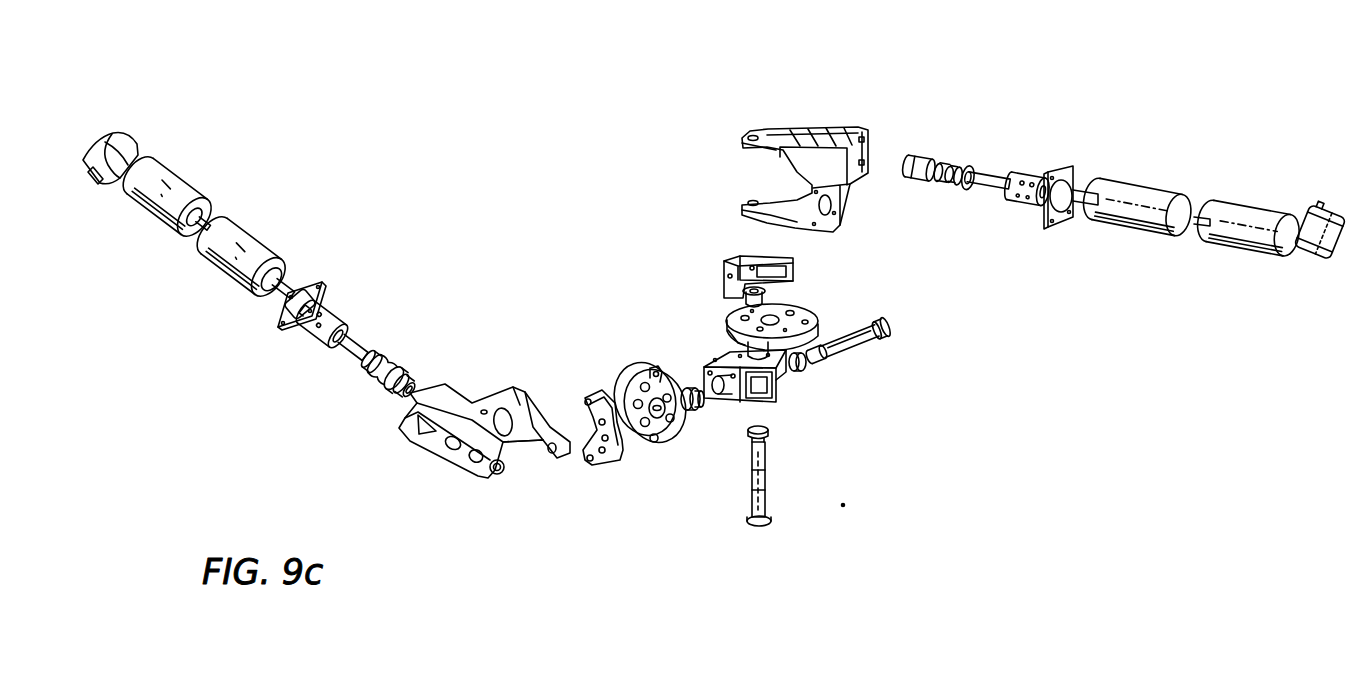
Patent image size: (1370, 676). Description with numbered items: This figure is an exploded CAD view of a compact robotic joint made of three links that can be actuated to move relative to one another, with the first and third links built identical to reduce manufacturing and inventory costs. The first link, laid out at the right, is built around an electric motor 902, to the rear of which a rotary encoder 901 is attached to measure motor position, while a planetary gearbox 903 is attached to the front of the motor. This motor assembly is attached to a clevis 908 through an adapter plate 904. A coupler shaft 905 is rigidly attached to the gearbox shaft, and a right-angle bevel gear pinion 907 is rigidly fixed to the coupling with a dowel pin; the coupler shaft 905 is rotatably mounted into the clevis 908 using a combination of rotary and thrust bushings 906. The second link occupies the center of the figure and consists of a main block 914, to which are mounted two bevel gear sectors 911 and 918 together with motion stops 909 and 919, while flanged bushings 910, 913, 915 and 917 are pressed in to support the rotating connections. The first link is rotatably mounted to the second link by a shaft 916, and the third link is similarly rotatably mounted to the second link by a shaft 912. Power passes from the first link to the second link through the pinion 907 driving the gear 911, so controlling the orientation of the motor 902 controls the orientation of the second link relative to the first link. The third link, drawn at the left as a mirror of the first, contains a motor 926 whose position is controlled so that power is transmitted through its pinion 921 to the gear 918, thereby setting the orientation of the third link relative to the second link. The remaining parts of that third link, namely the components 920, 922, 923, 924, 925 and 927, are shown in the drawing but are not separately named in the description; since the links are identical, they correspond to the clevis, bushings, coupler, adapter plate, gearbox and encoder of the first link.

The rotary encoder 901 is at (1310, 258).
The electric motor 902 is at (1250, 257).
The planetary gearbox 903 is at (1133, 235).
The adapter plate 904 is at (1060, 218).
The coupler shaft 905 is at (1027, 205).
The rotary and thrust bushings 906 is at (987, 158).
The right-angle bevel gear pinion 907 is at (905, 185).
The clevis 908 is at (853, 128).
The motion stop 909 is at (725, 265).
The flanged bushing 910 is at (782, 292).
The bevel gear sector 911 is at (803, 320).
The shaft 912 is at (853, 350).
The flanged bushing 913 is at (797, 370).
The main block 914 is at (763, 400).
The flanged bushing 915 is at (767, 430).
The shaft 916 is at (770, 483).
The flanged bushing 917 is at (693, 380).
The bevel gear sector 918 is at (683, 428).
The motion stop 919 is at (623, 447).
The mounting bracket 920 is at (492, 385).
The pinion 921 is at (413, 380).
The coupling 922 is at (368, 395).
The coupling block 923 is at (345, 310).
The mounting plate 924 is at (290, 282).
The motor housing 925 is at (262, 240).
The motor 926 is at (184, 178).
The end cap 927 is at (132, 140).